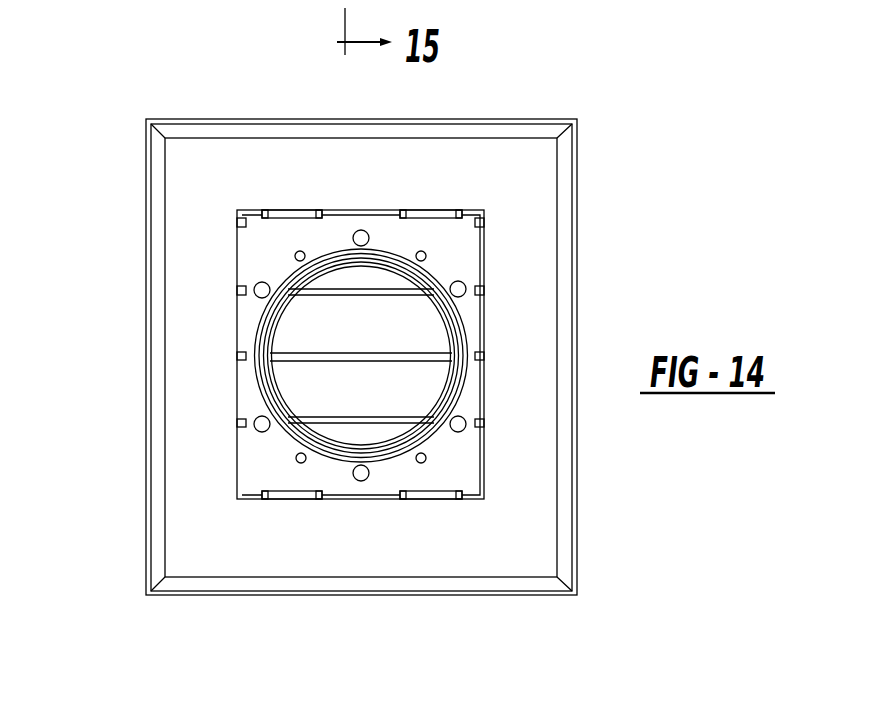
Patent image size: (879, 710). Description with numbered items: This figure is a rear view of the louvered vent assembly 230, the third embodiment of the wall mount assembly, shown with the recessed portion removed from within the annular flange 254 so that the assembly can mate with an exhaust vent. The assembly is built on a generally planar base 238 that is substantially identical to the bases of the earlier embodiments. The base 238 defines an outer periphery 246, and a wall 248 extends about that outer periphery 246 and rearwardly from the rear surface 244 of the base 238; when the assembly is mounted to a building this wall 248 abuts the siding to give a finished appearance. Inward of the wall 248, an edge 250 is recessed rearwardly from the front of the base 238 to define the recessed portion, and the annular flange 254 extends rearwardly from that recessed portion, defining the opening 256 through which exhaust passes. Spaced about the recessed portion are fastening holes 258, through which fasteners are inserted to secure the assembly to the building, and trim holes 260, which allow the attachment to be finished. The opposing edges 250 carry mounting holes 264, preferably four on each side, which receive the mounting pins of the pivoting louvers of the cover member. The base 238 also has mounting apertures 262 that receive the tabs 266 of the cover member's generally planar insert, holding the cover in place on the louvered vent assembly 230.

The louvered vent assembly 230 is at (620, 156).
The base 238 is at (517, 232).
The rear surface 244 is at (532, 523).
The outer periphery 246 is at (190, 173).
The wall 248 is at (148, 245).
The edge 250 is at (470, 210).
The annular flange 254 is at (453, 404).
The opening 256 is at (275, 327).
The fastening holes 258 is at (460, 427).
The trim holes 260 is at (300, 459).
The mounting apertures 262 is at (404, 218).
The mounting holes 264 is at (243, 357).
The tabs 266 is at (292, 217).